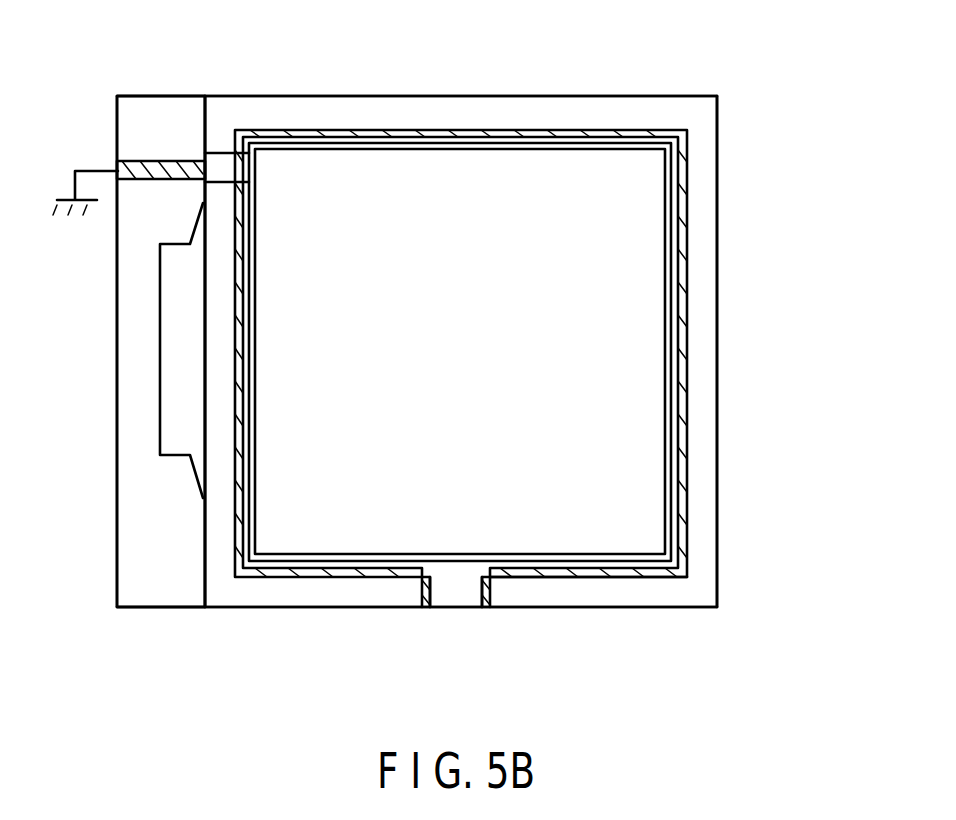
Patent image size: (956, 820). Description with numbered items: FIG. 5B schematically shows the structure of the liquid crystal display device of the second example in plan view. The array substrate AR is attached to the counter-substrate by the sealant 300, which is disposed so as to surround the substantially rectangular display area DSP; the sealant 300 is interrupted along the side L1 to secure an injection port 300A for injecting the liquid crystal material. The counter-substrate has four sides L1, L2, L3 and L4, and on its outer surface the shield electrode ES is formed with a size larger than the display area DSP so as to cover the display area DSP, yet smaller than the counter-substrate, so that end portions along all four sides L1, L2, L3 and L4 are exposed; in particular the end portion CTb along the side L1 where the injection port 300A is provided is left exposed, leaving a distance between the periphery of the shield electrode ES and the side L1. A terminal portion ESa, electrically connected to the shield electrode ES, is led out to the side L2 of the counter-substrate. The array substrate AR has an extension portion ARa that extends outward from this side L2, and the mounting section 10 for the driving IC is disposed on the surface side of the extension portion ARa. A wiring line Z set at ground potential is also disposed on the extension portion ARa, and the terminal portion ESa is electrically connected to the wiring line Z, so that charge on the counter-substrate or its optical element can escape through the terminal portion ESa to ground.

The end portion CTb is at (700, 307).
The side L3 is at (437, 96).
The side L4 is at (713, 430).
The side L1 is at (275, 610).
The side L2 is at (203, 540).
The extension portion ARa is at (143, 593).
The array substrate AR is at (181, 609).
The wiring line Z is at (143, 170).
The terminal portion ESa is at (225, 165).
The shield electrode ES is at (670, 537).
The display area DSP is at (662, 487).
The mounting section 10 is at (160, 346).
The injection port 300A is at (497, 617).
The sealant 300 is at (622, 578).